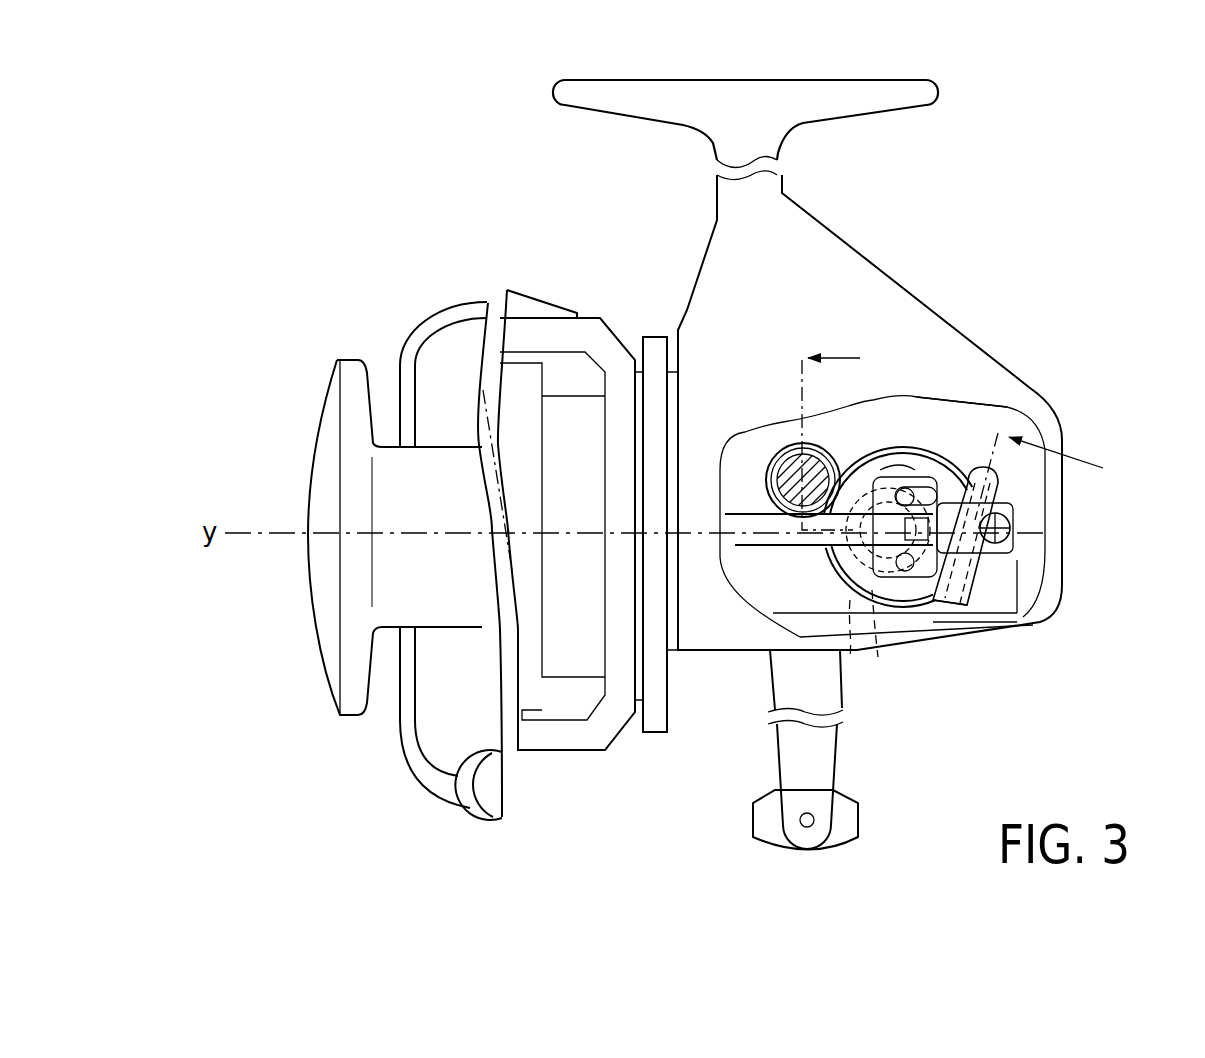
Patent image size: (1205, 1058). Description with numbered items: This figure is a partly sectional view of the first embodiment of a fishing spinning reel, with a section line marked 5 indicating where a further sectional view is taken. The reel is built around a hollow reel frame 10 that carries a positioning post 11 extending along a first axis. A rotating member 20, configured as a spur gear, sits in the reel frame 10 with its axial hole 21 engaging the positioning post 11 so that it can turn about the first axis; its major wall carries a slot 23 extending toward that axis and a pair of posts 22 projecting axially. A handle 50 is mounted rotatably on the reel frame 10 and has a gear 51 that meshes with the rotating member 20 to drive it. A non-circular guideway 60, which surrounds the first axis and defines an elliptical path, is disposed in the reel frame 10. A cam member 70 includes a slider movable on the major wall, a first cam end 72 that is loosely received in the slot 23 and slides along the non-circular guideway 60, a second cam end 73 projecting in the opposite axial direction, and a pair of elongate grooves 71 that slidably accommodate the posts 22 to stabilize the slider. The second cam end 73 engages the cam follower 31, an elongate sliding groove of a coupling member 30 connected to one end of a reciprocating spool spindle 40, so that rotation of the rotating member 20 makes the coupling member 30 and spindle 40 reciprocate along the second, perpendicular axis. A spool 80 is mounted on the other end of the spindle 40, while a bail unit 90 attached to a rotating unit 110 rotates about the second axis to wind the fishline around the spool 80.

The reel frame 10 is at (920, 290).
The positioning post 11 is at (883, 727).
The rotating member 20 is at (885, 442).
The axial hole 21 is at (850, 657).
The posts 22 is at (878, 657).
The slot 23 is at (945, 455).
The coupling member 30 is at (1012, 568).
The cam follower 31 is at (977, 607).
The reciprocating spool spindle 40 is at (767, 553).
The handle 50 is at (750, 827).
The gear 51 is at (786, 441).
The non-circular guideway 60 is at (894, 482).
The cam member 70 is at (921, 472).
The elongate grooves 71 is at (905, 572).
The first cam end 72 is at (1000, 488).
The second cam end 73 is at (1017, 523).
The spool 80 is at (386, 442).
The bail unit 90 is at (452, 297).
The rotating unit 110 is at (547, 758).
The section line 5- 5 is at (952, 428).